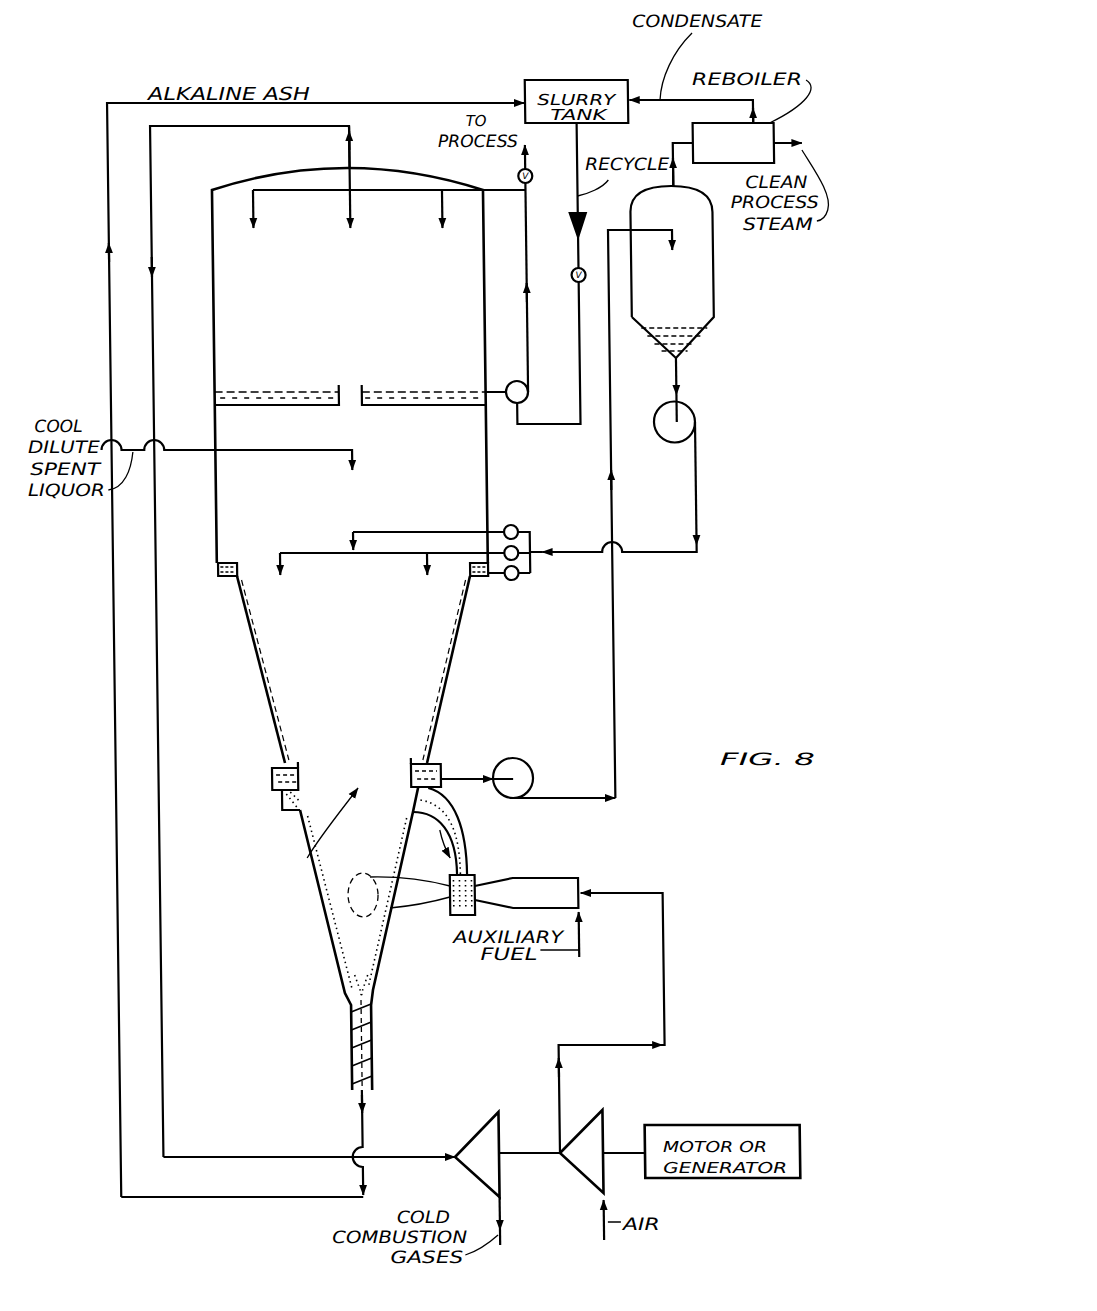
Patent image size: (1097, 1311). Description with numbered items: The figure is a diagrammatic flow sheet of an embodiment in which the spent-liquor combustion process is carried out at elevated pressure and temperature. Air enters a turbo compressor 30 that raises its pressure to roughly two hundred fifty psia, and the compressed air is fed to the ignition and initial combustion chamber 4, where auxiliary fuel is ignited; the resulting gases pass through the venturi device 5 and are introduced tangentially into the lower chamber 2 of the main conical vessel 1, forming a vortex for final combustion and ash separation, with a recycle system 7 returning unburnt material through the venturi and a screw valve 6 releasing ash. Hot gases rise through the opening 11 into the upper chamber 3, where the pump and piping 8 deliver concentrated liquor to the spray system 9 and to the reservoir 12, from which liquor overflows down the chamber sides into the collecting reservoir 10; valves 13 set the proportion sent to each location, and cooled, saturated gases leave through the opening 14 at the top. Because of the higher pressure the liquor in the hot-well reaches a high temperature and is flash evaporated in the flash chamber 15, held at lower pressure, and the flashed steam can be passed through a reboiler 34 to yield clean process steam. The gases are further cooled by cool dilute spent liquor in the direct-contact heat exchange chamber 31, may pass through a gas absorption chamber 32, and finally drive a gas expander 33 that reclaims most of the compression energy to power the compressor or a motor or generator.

The main conical vessel 1 is at (358, 833).
The lower chamber 2 is at (345, 943).
The upper chamber 3 is at (281, 688).
The ignition and initial combustion chamber 4 is at (534, 877).
The venturi device 5 is at (423, 900).
The screw valve 6 is at (359, 1044).
The recycle system 7 is at (281, 810).
The pump and piping 8 is at (605, 743).
The spray system 9 is at (345, 206).
The collecting reservoir 10 is at (268, 767).
The opening 11 is at (296, 858).
The reservoir 12 is at (210, 570).
The valves 13 is at (516, 566).
The opening 14 is at (348, 157).
The flash chamber 15 is at (710, 267).
The turbo compressor 30 is at (572, 1182).
The cooling direct-contact heat exchange chamber 31 is at (435, 477).
The gas absorption chamber 32 is at (412, 284).
The gas expander 33 is at (467, 1125).
The reboiler 34 is at (745, 153).